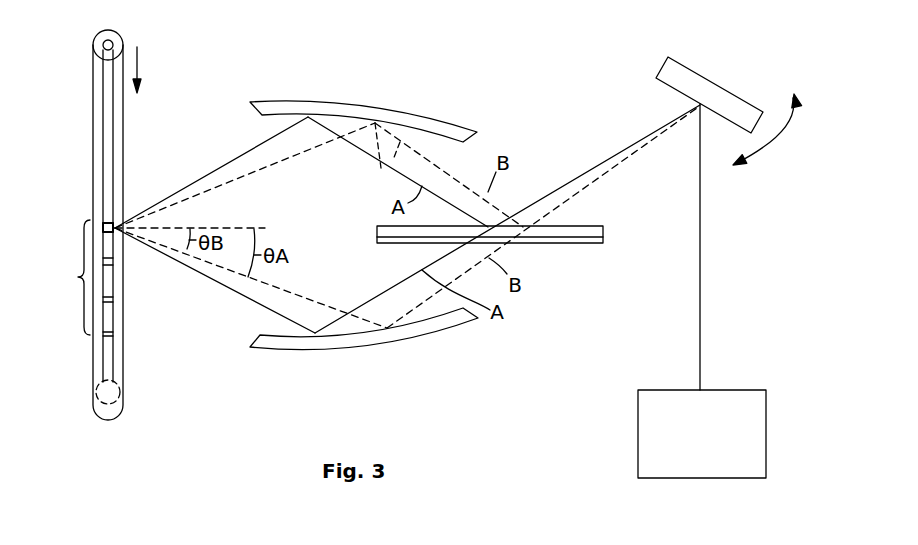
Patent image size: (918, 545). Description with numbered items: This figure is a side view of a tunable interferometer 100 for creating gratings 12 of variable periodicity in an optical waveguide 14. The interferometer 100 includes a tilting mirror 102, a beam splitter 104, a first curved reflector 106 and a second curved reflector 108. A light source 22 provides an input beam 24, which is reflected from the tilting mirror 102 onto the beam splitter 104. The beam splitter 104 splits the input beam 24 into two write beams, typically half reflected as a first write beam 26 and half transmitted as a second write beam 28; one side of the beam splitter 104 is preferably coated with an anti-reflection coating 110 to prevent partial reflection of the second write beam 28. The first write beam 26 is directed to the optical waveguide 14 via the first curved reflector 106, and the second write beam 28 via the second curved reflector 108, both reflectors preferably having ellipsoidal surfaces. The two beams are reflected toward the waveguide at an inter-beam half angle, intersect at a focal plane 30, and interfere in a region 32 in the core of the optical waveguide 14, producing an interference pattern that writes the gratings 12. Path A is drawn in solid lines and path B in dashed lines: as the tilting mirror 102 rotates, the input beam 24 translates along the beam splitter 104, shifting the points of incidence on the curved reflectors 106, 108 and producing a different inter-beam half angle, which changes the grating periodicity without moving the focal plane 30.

The tunable interferometer 100 is at (487, 45).
The tilting mirror 102 is at (713, 82).
The beam splitter 104 is at (605, 234).
The first curved reflector 106 is at (312, 102).
The second curved reflector 108 is at (346, 348).
The anti-reflection coating 110 is at (584, 258).
The gratings 12 is at (77, 278).
The optical waveguide 14 is at (93, 80).
The light source 22 is at (673, 481).
The input beam 24 is at (702, 268).
The first write beam 26 is at (379, 162).
The second write beam 28 is at (388, 291).
The focal plane 30 is at (119, 246).
The region 32 is at (107, 221).